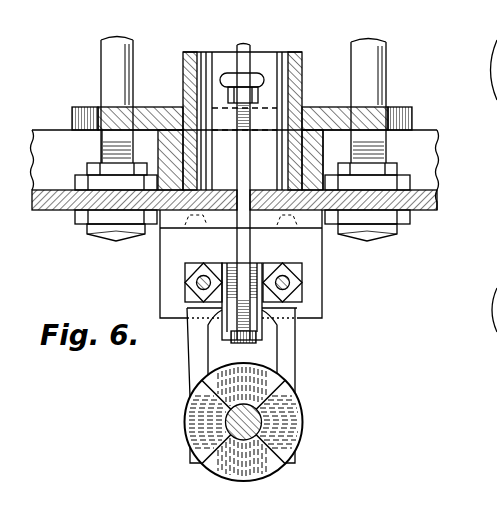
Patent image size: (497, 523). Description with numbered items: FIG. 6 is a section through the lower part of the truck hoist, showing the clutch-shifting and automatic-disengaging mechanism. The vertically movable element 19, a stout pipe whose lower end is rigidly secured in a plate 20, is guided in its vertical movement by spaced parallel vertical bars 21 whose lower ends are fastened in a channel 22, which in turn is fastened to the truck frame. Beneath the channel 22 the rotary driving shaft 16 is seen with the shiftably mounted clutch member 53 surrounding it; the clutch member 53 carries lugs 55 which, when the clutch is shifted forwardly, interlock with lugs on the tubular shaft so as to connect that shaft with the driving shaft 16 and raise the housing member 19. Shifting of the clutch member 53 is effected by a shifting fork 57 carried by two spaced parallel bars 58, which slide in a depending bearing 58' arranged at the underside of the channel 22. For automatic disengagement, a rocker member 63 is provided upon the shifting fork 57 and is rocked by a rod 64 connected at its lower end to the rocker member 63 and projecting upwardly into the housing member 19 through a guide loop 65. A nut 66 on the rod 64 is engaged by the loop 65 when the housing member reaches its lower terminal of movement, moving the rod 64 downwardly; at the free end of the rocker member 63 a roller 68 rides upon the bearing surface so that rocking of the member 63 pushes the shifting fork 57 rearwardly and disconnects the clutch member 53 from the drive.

The rotary driving shaft 16 is at (280, 437).
The vertically movable element 19 is at (183, 87).
The plate 20 is at (400, 112).
The bars 21 is at (109, 68).
The channel 22 is at (48, 130).
The clutch member 53 is at (241, 479).
The lugs 55 is at (192, 421).
The shifting fork 57 is at (191, 361).
The bars 58 is at (244, 282).
The depending bearing 58' is at (263, 264).
The rocker member 63 is at (187, 310).
The rod 64 is at (251, 58).
The guide loop 65 is at (264, 81).
The nut 66 is at (258, 95).
The roller 68 is at (258, 343).